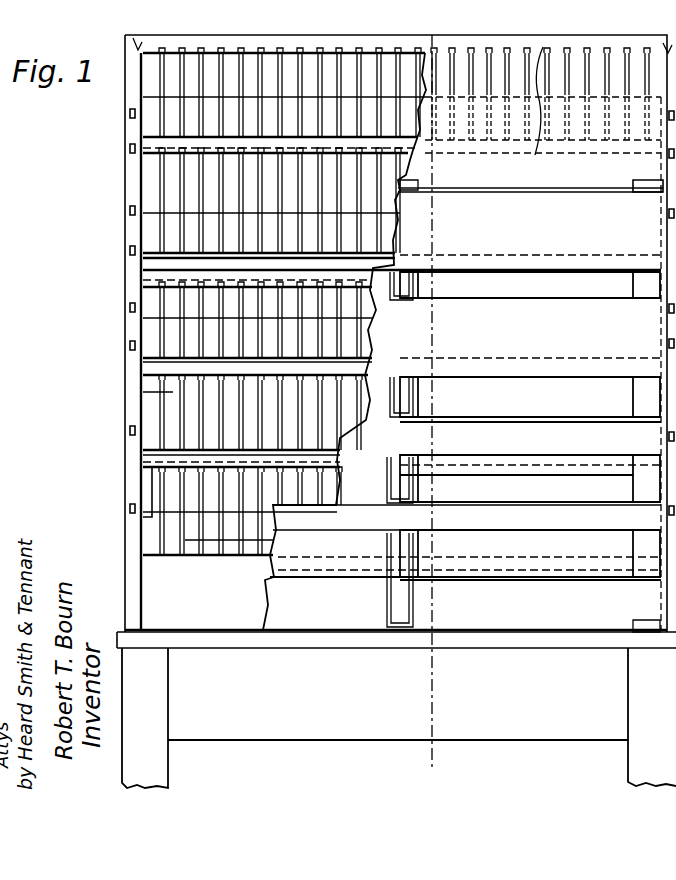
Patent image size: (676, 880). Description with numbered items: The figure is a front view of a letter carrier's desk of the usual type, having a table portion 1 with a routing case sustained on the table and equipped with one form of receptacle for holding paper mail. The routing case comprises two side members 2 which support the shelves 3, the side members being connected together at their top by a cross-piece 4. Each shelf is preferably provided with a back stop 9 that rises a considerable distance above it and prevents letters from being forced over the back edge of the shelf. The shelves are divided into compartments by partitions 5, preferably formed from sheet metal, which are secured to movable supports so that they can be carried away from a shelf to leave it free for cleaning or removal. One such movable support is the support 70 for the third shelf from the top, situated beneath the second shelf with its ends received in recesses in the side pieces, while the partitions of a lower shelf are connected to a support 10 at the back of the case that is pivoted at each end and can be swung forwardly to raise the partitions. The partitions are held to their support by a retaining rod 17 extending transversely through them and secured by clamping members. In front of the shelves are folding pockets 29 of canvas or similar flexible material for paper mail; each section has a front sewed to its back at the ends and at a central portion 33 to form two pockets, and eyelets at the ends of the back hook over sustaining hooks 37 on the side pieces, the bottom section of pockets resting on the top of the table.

The table portion 1 is at (112, 633).
The side members 2 is at (448, 33).
The shelves 3 is at (148, 150).
The cross-piece 4 is at (543, 113).
The partitions 5 is at (203, 78).
The back stop 9 is at (176, 116).
The support 10 is at (188, 390).
The retaining rod 17 is at (268, 65).
The pockets 29 is at (497, 660).
The central portion 33 is at (417, 288).
The sustaining hooks 37 is at (130, 250).
The support 70 is at (143, 273).